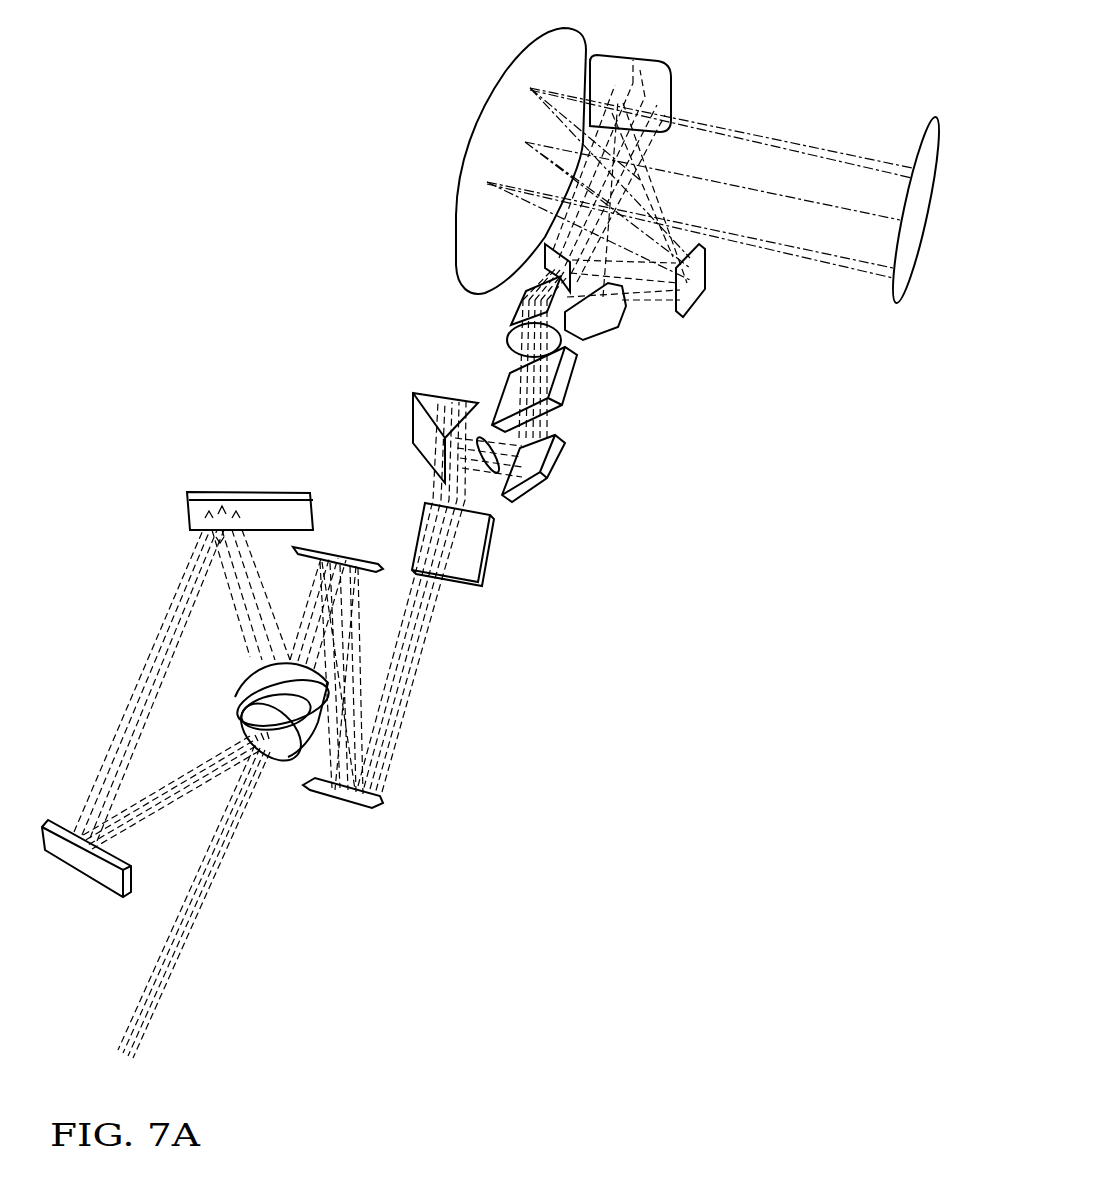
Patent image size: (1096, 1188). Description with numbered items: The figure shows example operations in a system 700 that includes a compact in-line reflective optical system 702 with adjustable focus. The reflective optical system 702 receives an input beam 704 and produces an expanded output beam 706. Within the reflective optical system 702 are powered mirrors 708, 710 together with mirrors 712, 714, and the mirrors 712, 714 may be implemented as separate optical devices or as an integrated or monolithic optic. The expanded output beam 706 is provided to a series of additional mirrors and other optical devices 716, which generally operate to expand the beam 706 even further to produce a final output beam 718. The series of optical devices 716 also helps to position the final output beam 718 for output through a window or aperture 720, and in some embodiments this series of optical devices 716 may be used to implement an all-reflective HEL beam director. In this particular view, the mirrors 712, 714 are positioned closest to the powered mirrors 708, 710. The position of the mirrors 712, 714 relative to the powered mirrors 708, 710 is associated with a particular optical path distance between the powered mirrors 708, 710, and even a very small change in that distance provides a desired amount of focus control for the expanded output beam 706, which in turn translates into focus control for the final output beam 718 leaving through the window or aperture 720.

The system 700 is at (512, 890).
The reflective optical system 702 is at (102, 667).
The input beam 704 is at (158, 1021).
The expanded output beam 706 is at (297, 583).
The powered mirror 708 is at (281, 717).
The powered mirror 710 is at (343, 793).
The mirror 712 is at (85, 877).
The mirror 714 is at (250, 492).
The series of additional mirrors and other optical devices 716 is at (512, 616).
The final output beam 718 is at (810, 100).
The window or aperture 720 is at (895, 300).